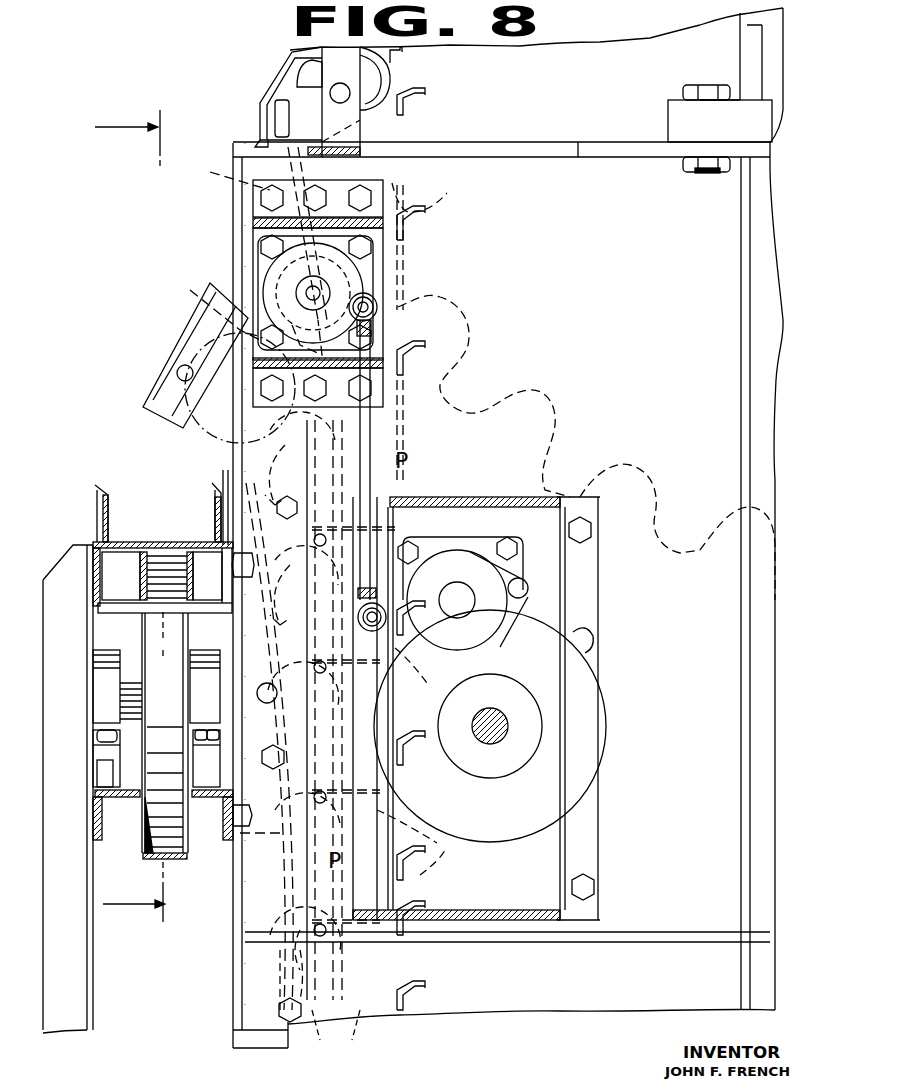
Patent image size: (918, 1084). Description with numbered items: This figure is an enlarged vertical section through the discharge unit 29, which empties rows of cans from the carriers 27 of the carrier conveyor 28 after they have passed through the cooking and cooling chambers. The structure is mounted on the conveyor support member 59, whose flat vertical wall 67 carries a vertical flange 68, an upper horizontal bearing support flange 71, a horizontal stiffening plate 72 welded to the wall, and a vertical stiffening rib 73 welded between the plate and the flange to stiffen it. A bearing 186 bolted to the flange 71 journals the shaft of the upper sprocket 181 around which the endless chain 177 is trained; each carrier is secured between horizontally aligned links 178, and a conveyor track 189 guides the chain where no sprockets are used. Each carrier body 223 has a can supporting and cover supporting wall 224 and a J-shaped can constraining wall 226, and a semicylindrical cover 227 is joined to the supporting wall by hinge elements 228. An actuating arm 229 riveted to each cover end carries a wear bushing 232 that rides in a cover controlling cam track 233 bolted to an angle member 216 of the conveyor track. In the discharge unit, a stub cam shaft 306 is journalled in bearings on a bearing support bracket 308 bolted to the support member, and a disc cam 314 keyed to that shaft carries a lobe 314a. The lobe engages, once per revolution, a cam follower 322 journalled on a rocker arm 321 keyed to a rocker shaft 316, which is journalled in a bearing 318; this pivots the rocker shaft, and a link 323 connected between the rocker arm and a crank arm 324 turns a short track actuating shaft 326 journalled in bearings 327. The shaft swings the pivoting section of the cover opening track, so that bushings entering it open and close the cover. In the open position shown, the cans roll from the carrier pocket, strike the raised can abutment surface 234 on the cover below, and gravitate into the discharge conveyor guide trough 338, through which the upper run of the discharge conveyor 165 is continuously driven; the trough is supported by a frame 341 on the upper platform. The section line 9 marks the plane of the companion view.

The section line 9- 9 is at (139, 516).
The carriers 27 is at (262, 95).
The carrier conveyor 28 is at (286, 51).
The discharge unit 29 is at (172, 352).
The conveyor support member 59 is at (716, 202).
The flat vertical wall 67 is at (611, 302).
The vertical flange 68 is at (245, 456).
The upper horizontal bearing support flange 71 is at (604, 150).
The horizontal stiffening plate 72 is at (640, 948).
The vertical stiffening rib 73 is at (741, 378).
The discharge conveyor 165 is at (165, 545).
The endless chain 177 is at (352, 66).
The chain link 178 is at (362, 136).
The upper sprocket 181 is at (520, 483).
The bearing 186 is at (722, 134).
The conveyor track 189 is at (342, 1037).
The angle member 216 is at (380, 978).
The carrier body 223 is at (408, 180).
The can supporting and cover supporting wall 224 is at (322, 795).
The J-shaped can constraining wall 226 is at (415, 118).
The cover 227 is at (316, 722).
The hinge element 228 is at (432, 892).
The actuating arm 229 is at (262, 118).
The wear bushing 232 is at (237, 346).
The cover controlling cam track 233 is at (283, 843).
The raised can abutment surface 234 is at (288, 452).
The stub cam shaft 306 is at (500, 720).
The bearing support bracket 308 is at (585, 596).
The disc cam 314 is at (586, 691).
The lobe 314a is at (580, 638).
The rocker shaft 316 is at (462, 612).
The bearing 318 is at (428, 540).
The rocker arm 321 is at (490, 610).
The cam follower 322 is at (528, 590).
The link 323 is at (372, 393).
The crank arm 324 is at (372, 292).
The track actuating shaft 326 is at (300, 285).
The bearing 327 is at (300, 283).
The discharge conveyor guide trough 338 is at (105, 495).
The frame 341 is at (100, 1010).